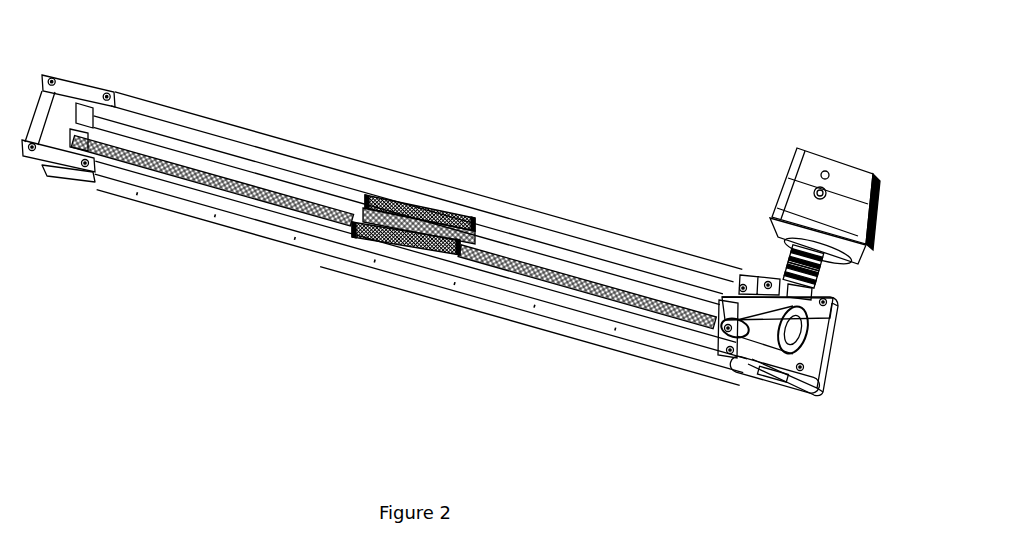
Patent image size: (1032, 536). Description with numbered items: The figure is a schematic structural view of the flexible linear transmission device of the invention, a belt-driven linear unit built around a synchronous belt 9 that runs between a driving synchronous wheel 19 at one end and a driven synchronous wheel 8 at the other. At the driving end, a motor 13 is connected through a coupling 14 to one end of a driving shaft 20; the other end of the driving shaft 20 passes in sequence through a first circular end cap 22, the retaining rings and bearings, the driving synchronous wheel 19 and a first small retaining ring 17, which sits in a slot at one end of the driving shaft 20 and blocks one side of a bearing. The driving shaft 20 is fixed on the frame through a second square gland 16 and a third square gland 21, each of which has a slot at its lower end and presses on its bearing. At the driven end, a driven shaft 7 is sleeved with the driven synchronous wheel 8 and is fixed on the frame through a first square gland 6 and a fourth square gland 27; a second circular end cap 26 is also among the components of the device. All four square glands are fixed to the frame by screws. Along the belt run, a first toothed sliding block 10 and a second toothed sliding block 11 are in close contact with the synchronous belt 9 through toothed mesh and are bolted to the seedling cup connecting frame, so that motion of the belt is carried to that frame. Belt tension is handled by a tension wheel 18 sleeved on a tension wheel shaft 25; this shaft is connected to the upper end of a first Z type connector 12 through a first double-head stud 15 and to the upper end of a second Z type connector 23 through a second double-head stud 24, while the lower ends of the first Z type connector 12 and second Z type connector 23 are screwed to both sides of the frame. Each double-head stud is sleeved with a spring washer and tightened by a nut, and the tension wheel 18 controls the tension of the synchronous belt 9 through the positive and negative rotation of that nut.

The first square gland 6 is at (70, 86).
The driven shaft 7 is at (88, 106).
The driven synchronous wheel 8 is at (117, 100).
The synchronous belt 9 is at (222, 170).
The first toothed sliding block 10 is at (390, 196).
The second toothed sliding block 11 is at (448, 210).
The first Z type connector 12 is at (742, 274).
The motor 13 is at (838, 198).
The coupling 14 is at (827, 265).
The first double-head stud 15 is at (808, 285).
The second square gland 16 is at (800, 297).
The first small retaining ring 17 is at (770, 307).
The tension wheel 18 is at (843, 327).
The driving synchronous wheel 19 is at (812, 357).
The driving shaft 20 is at (827, 388).
The third square gland 21 is at (783, 388).
The first circular end cap 22 is at (773, 377).
The second Z type connector 23 is at (720, 343).
The second double-head stud 24 is at (718, 337).
The tension wheel shaft 25 is at (713, 333).
The second circular end cap 26 is at (80, 183).
The fourth square gland 27 is at (50, 177).